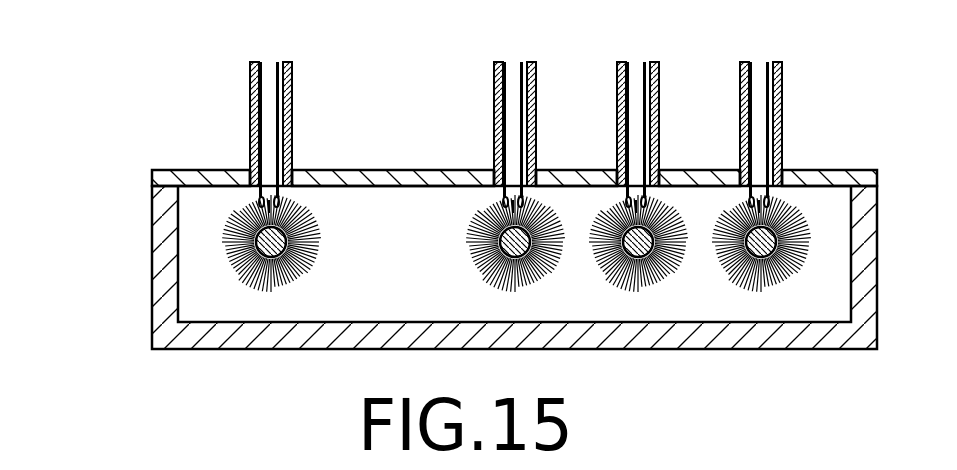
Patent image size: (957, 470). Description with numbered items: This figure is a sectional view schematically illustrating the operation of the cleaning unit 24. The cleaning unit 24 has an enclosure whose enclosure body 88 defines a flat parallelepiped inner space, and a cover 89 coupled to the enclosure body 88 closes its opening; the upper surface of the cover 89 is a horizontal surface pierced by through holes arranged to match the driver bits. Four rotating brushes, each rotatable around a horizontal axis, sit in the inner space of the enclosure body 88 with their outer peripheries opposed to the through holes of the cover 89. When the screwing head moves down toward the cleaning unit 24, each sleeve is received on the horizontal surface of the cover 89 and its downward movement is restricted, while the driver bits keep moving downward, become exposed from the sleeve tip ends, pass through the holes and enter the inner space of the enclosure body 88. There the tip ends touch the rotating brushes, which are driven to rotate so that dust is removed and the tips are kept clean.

The cleaning unit 24 is at (145, 138).
The enclosure body 88 is at (154, 301).
The cover 89 is at (152, 174).